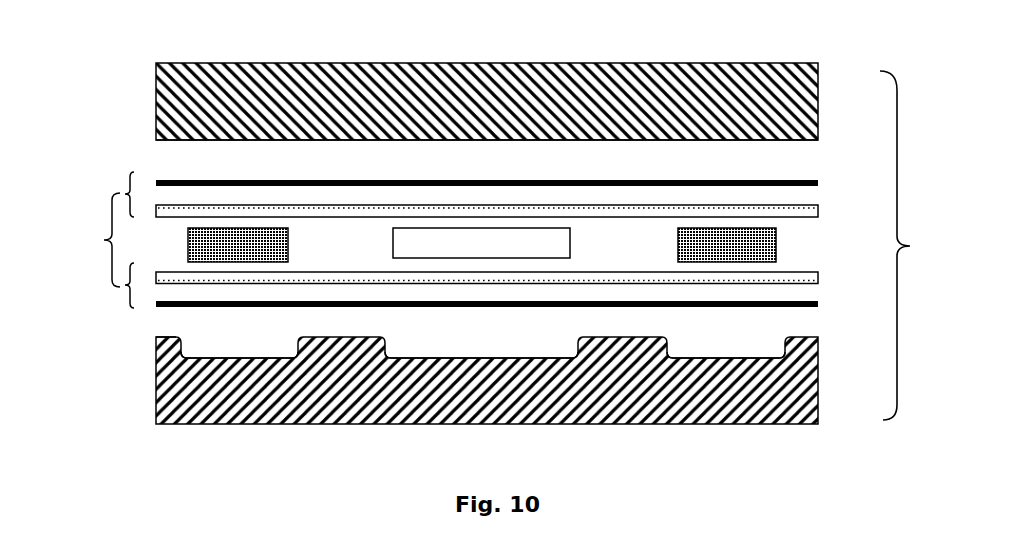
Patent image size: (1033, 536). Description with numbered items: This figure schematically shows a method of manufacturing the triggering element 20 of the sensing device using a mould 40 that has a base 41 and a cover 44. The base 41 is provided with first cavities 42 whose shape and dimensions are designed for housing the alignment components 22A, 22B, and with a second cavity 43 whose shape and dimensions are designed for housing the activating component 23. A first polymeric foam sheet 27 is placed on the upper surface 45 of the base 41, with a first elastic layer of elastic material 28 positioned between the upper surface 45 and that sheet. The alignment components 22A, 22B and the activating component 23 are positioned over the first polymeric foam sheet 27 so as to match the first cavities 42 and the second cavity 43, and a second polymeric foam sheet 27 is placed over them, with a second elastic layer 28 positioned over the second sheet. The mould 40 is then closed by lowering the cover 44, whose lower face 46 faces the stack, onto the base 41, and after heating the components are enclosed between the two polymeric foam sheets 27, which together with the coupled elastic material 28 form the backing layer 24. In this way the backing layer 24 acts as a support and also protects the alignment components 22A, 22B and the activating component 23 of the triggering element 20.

The triggering element 20 is at (80, 173).
The alignment component 22A is at (188, 250).
The alignment component 22B is at (776, 247).
The activating component 23 is at (418, 239).
The backing layer 24 is at (104, 240).
The polyethylene foam sheet 27 is at (818, 214).
The elastic material 28 is at (815, 182).
The mould 40 is at (911, 245).
The base 41 is at (264, 438).
The first cavity 42 is at (277, 353).
The second cavity 43 is at (508, 355).
The cover 44 is at (294, 60).
The upper surface 45 is at (165, 336).
The lower surface of upper block 46 is at (165, 142).